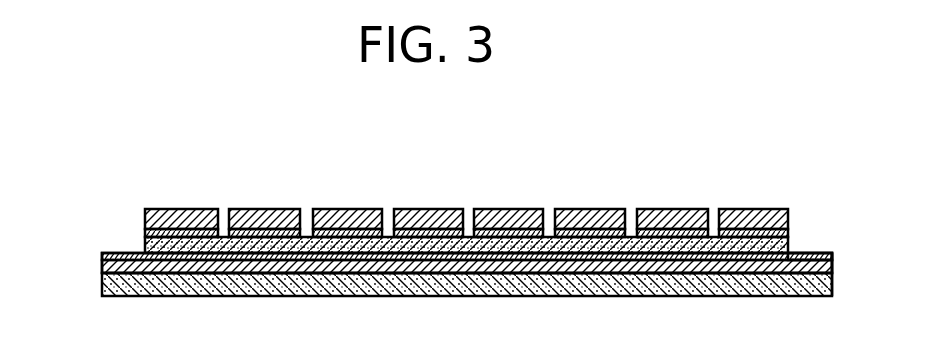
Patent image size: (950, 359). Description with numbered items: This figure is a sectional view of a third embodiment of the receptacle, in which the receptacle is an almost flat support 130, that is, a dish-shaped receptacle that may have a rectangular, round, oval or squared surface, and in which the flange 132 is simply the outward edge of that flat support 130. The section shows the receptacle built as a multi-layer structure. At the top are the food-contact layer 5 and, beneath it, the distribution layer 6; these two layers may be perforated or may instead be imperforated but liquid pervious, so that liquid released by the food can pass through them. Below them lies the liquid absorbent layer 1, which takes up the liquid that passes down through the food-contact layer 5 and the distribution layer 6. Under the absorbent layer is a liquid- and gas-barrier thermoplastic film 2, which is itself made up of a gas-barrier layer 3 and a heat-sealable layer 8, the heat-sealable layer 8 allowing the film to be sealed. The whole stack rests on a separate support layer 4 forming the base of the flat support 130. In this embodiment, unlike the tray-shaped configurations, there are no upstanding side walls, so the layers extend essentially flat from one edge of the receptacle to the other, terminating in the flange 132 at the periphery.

The liquid absorbent layer 1 is at (145, 248).
The liquid- and gas-barrier thermoplastic film 2 is at (97, 253).
The gas-barrier layer 3 is at (128, 263).
The support layer 4 is at (163, 285).
The food-contact layer 5 is at (182, 209).
The distribution layer 6 is at (145, 232).
The heat-sealable layer 8 is at (832, 257).
The flat support 130 is at (427, 240).
The flange 132 is at (816, 252).